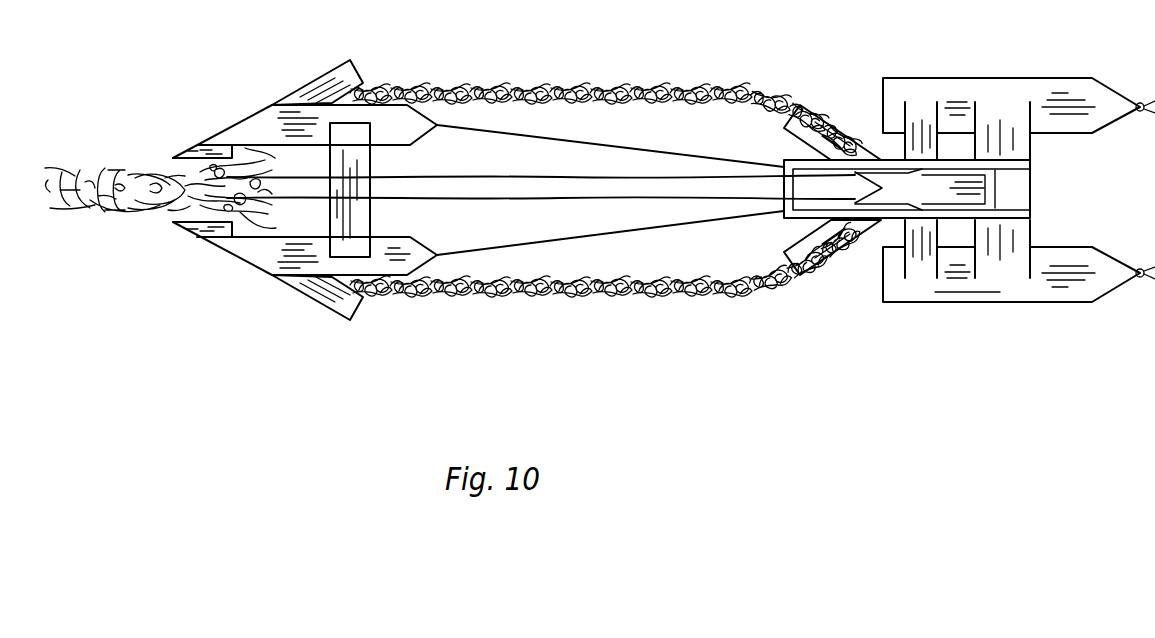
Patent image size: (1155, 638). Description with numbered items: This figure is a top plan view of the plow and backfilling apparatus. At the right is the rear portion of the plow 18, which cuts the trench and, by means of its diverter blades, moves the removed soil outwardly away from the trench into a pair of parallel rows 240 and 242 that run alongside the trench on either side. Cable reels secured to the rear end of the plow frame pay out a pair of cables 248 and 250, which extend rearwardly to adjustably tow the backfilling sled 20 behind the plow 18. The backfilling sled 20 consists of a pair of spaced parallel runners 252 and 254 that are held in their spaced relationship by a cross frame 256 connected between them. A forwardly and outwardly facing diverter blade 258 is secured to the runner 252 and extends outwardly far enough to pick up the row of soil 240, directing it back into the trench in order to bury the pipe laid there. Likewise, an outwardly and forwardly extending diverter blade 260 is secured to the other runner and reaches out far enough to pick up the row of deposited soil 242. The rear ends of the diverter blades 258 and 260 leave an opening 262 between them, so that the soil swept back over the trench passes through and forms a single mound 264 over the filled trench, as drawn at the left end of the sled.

The plow 18 is at (968, 90).
The backfilling sled 20 is at (230, 277).
The row of soil 240 is at (684, 298).
The row of deposited soil 242 is at (679, 88).
The cable 248 is at (650, 231).
The cable 250 is at (656, 148).
The runner 252 is at (415, 247).
The runner 254 is at (415, 117).
The cross frame 256 is at (366, 163).
The diverter blade 258 is at (310, 303).
The diverter blade 260 is at (315, 77).
The opening 262 is at (183, 166).
The mound 264 is at (107, 213).